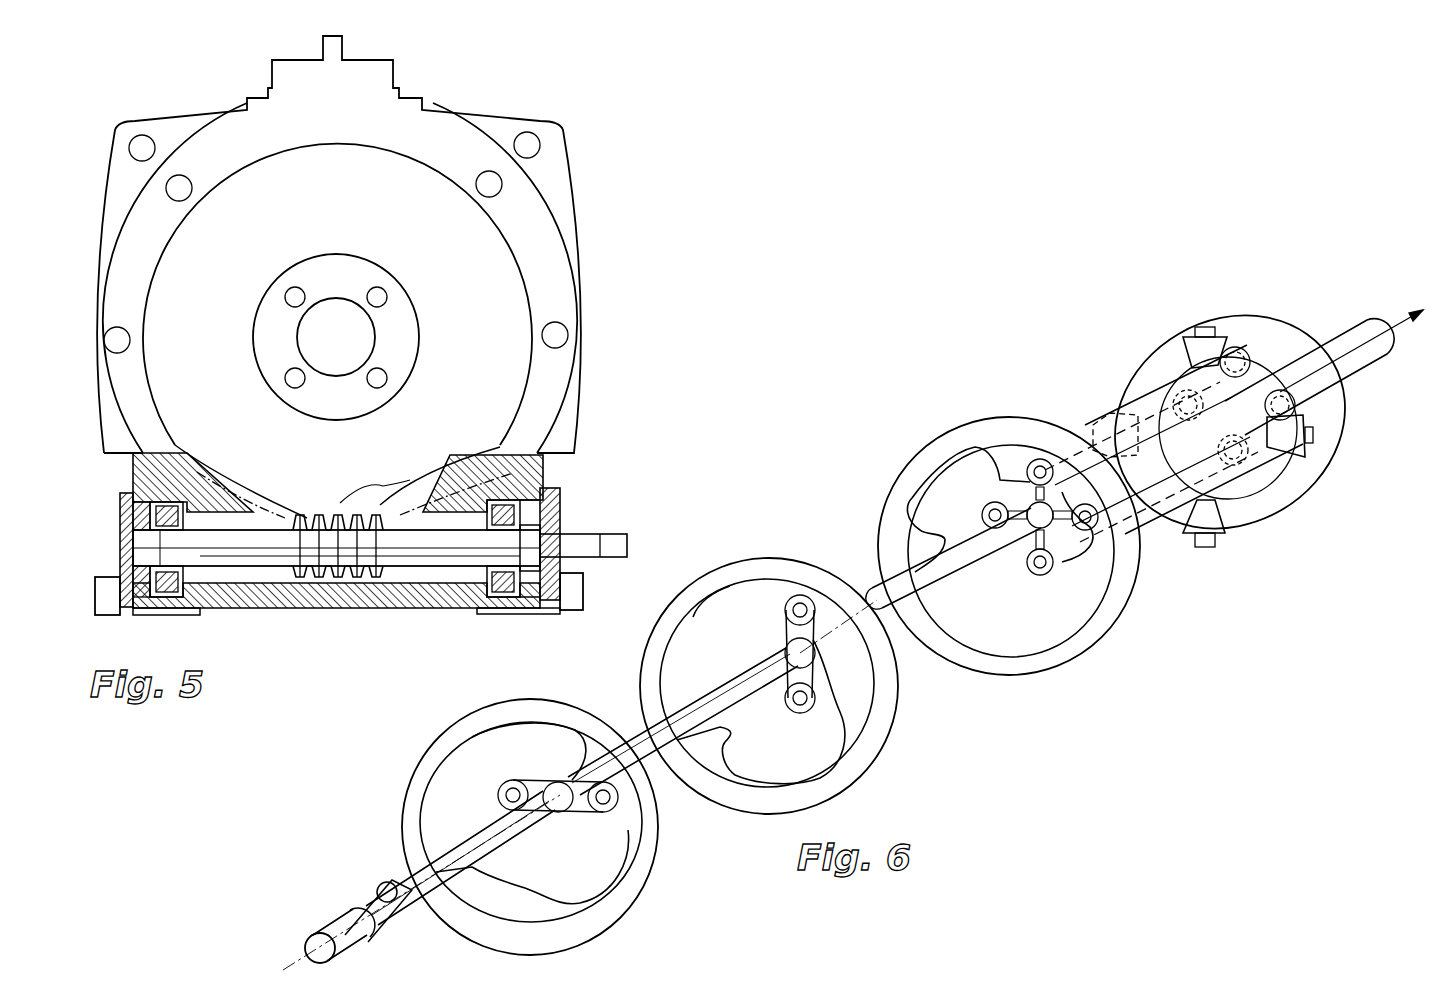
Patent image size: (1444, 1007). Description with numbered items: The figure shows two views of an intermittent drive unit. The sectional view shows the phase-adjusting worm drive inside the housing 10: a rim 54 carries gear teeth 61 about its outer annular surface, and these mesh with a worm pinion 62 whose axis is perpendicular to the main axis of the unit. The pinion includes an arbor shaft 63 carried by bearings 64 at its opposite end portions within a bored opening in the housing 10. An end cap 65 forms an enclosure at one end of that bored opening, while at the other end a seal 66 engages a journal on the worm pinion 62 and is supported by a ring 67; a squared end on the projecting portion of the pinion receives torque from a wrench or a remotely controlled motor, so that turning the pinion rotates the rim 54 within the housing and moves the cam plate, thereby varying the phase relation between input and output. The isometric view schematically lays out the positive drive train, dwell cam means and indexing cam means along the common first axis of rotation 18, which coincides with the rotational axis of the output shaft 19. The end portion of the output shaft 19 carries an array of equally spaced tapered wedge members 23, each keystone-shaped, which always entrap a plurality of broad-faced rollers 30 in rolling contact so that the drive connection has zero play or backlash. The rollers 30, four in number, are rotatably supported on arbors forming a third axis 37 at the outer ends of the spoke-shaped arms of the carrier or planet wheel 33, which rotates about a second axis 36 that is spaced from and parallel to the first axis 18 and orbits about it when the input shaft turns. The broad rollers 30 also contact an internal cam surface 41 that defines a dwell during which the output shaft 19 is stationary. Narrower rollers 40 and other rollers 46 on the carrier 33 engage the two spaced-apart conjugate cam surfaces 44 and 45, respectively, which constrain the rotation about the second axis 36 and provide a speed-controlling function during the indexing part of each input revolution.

In FIG. 5, the housing 10 is at (572, 252).
In FIG. 5, the output shaft 19 is at (360, 328).
In FIG. 6, the output shaft 19 is at (1368, 358).
In FIG. 5, the rim 54 is at (317, 508).
In FIG. 5, the gear teeth 61 is at (395, 512).
In FIG. 5, the worm pinion 62 is at (320, 578).
In FIG. 5, the arbor shaft 63 is at (230, 560).
In FIG. 5, the bearings 64 is at (175, 592).
In FIG. 5, the end cap 65 is at (127, 607).
In FIG. 5, the seal 66 is at (560, 515).
In FIG. 5, the ring 67 is at (548, 607).
In FIG. 6, the axis of rotation 18 is at (370, 938).
In FIG. 6, the second axis 36 is at (470, 847).
In FIG. 6, the conjugate cam surface 45 is at (478, 735).
In FIG. 6, the rollers 46 is at (505, 785).
In FIG. 6, the third axis 37 is at (500, 797).
In FIG. 6, the carrier or planet wheel 33 is at (585, 805).
In FIG. 6, the conjugate cam surface 44 is at (693, 615).
In FIG. 6, the rollers 40 is at (787, 605).
In FIG. 6, the internal cam surface 41 is at (958, 640).
In FIG. 6, the rollers 30 is at (1040, 458).
In FIG. 6, the tapered wedge members 23 is at (1190, 338).